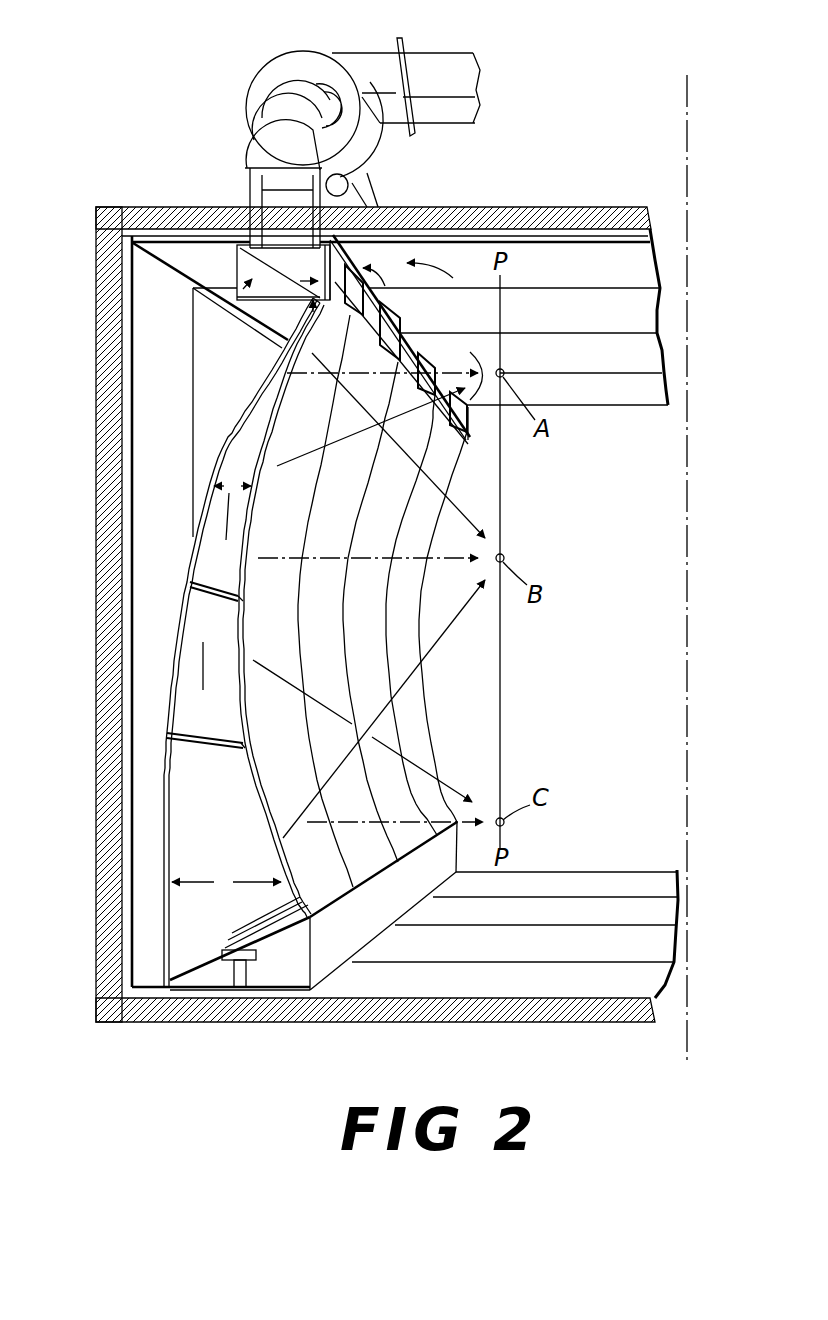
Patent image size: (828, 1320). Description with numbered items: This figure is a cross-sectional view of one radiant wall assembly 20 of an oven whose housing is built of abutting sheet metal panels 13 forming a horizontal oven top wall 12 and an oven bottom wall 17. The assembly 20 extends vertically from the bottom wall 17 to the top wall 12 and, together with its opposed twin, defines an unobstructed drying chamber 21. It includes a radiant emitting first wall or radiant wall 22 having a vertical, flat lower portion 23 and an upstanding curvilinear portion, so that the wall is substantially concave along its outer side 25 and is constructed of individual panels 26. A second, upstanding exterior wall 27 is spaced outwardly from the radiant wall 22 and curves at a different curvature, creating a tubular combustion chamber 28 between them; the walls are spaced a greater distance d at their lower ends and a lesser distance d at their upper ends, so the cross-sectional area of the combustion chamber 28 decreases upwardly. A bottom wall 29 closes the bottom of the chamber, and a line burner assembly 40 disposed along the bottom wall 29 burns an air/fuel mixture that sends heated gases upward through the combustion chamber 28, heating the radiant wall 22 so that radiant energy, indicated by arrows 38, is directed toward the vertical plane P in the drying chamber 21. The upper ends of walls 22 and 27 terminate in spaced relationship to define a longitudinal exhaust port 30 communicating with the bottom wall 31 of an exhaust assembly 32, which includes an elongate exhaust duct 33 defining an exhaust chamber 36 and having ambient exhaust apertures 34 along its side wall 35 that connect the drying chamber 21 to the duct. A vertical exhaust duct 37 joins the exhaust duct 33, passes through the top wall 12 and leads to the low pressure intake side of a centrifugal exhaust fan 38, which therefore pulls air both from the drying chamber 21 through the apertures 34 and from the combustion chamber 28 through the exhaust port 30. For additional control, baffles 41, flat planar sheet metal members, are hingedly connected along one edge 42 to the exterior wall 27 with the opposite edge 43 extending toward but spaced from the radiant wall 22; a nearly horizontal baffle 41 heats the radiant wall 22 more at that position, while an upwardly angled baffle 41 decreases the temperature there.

The oven top wall 12 is at (181, 210).
The panels 13 is at (410, 613).
The oven bottom wall 17 is at (603, 1014).
The radiant wall assembly 20 is at (218, 458).
The drying chamber 21 is at (647, 577).
The radiant wall 22 is at (253, 493).
The lower portion 23 is at (370, 907).
The outer side 25 is at (318, 366).
The panels 26 is at (276, 907).
The exterior wall 27 is at (195, 543).
The combustion chamber 28 is at (250, 870).
The bottom wall 29 is at (212, 1000).
The exhaust port 30 is at (313, 333).
The bottom wall of exhaust assembly 31 is at (265, 312).
The exhaust assembly 32 is at (250, 80).
The exhaust duct 33 is at (237, 270).
The exhaust apertures 34 is at (430, 363).
The side wall 35 is at (407, 297).
The exhaust chamber 36 is at (350, 253).
The vertical exhaust duct 37 is at (248, 160).
The centrifugal exhaust fan 38 is at (317, 62).
The line burner assembly 40 is at (230, 933).
The baffles 41 is at (223, 598).
The hinged edge 42 is at (195, 578).
The opposite edge 43 is at (237, 598).